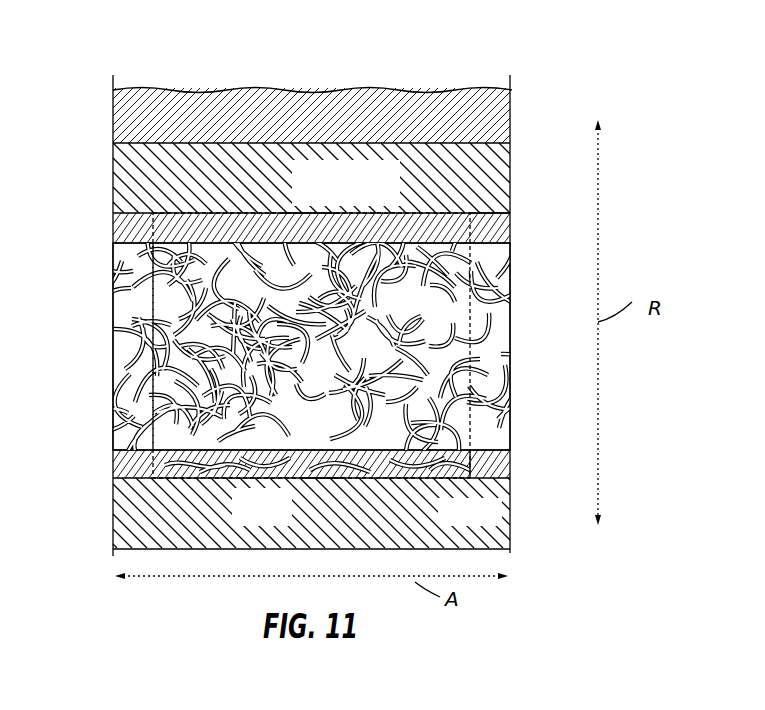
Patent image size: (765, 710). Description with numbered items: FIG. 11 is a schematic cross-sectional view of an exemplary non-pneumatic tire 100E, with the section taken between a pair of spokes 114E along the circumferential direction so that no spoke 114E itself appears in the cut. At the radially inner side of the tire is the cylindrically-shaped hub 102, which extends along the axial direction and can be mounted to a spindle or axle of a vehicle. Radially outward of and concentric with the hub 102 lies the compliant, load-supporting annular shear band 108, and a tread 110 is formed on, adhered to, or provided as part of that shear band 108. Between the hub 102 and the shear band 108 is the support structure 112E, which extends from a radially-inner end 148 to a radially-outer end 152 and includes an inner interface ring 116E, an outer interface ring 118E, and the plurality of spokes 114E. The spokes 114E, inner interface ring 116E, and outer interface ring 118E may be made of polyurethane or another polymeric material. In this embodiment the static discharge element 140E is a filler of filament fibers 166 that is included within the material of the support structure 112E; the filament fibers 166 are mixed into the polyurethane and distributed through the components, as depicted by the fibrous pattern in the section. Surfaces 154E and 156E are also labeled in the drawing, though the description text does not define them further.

The non-pneumatic tire 100E is at (512, 48).
The hub 102 is at (112, 507).
The annular shear band 108 is at (112, 185).
The tread 110 is at (126, 113).
The support structure 112E is at (112, 278).
The spokes 114E is at (112, 410).
The inner interface ring 116E is at (112, 455).
The outer interface ring 118E is at (112, 220).
The static discharge element 140E is at (510, 398).
The radially-inner end 148 is at (320, 480).
The radially-outer end 152 is at (312, 212).
The lower surface 154E is at (470, 478).
The upper surface 156E is at (512, 232).
The filament fibers 166 is at (120, 366).